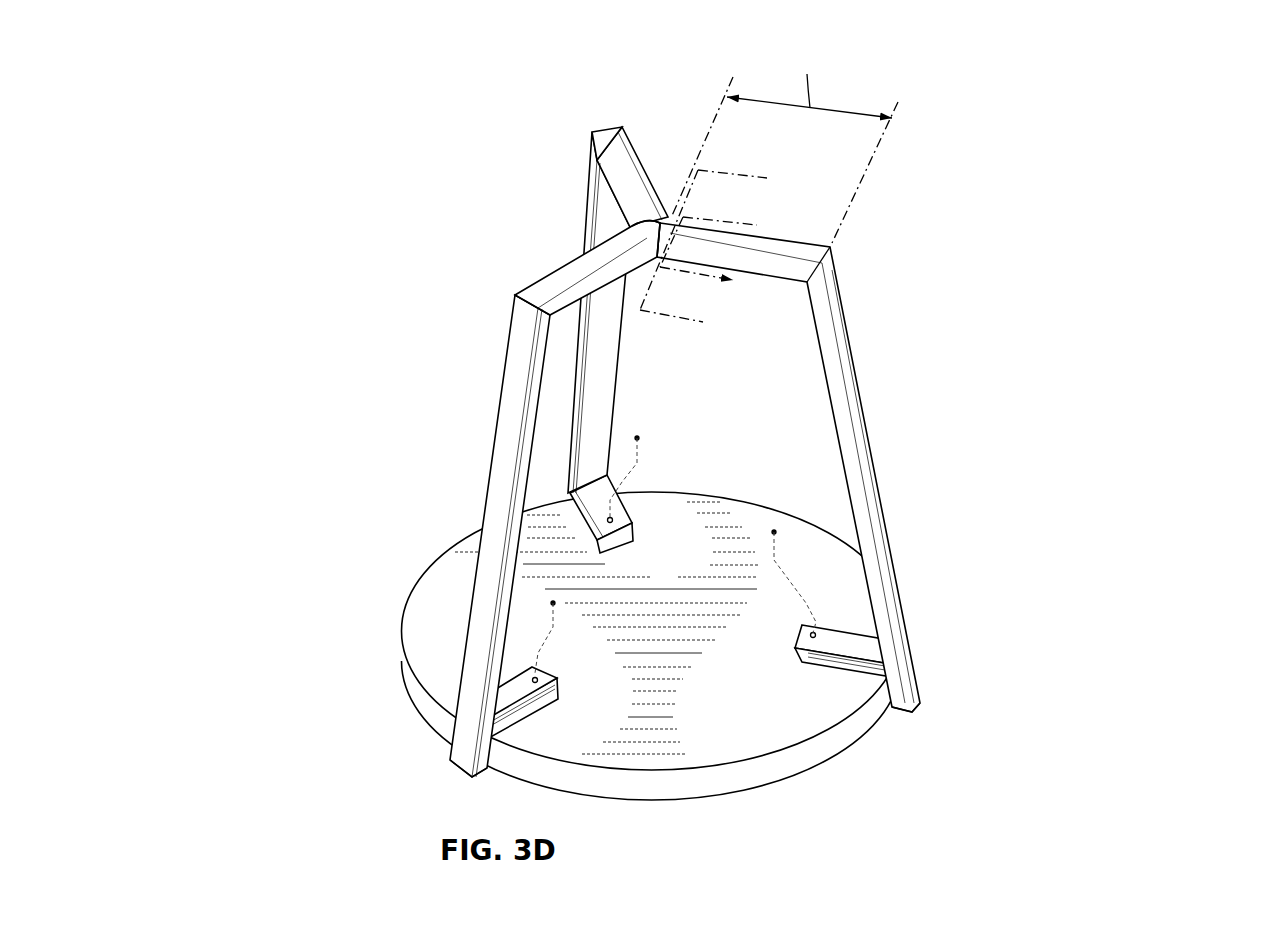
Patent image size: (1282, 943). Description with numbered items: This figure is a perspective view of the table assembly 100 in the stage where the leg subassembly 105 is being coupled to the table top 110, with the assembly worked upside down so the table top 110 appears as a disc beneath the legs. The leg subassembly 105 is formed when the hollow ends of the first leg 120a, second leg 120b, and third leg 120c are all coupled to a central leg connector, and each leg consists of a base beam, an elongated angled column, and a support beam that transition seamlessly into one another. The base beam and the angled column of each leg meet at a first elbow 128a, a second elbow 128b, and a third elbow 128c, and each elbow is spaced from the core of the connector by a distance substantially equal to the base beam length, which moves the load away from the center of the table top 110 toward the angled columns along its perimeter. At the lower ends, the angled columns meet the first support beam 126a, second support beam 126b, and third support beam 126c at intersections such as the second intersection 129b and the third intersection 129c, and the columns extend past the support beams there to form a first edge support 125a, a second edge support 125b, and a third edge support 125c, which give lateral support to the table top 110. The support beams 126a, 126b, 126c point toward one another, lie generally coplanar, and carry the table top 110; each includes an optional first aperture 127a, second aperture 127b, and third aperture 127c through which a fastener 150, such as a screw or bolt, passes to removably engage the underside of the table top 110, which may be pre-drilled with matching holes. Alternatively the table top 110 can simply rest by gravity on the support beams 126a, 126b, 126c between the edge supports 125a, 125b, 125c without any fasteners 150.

The table assembly 100 is at (1135, 71).
The leg subassembly 105 is at (667, 200).
The table top 110 is at (718, 748).
The first leg 120a is at (572, 178).
The second leg 120b is at (472, 369).
The third leg 120c is at (858, 273).
The first edge support 125a is at (570, 495).
The second edge support 125b is at (458, 747).
The third edge support 125c is at (898, 689).
The first support beam 126a is at (598, 503).
The second support beam 126b is at (534, 708).
The third support beam 126c is at (851, 645).
The first aperture 127a is at (618, 516).
The second aperture 127b is at (520, 673).
The third aperture 127c is at (798, 652).
The first elbow 128a is at (588, 126).
The second elbow 128b is at (512, 294).
The third elbow 128c is at (843, 239).
The second intersection 129b is at (560, 482).
The third intersection 129c is at (921, 642).
The fastener 150 is at (639, 436).